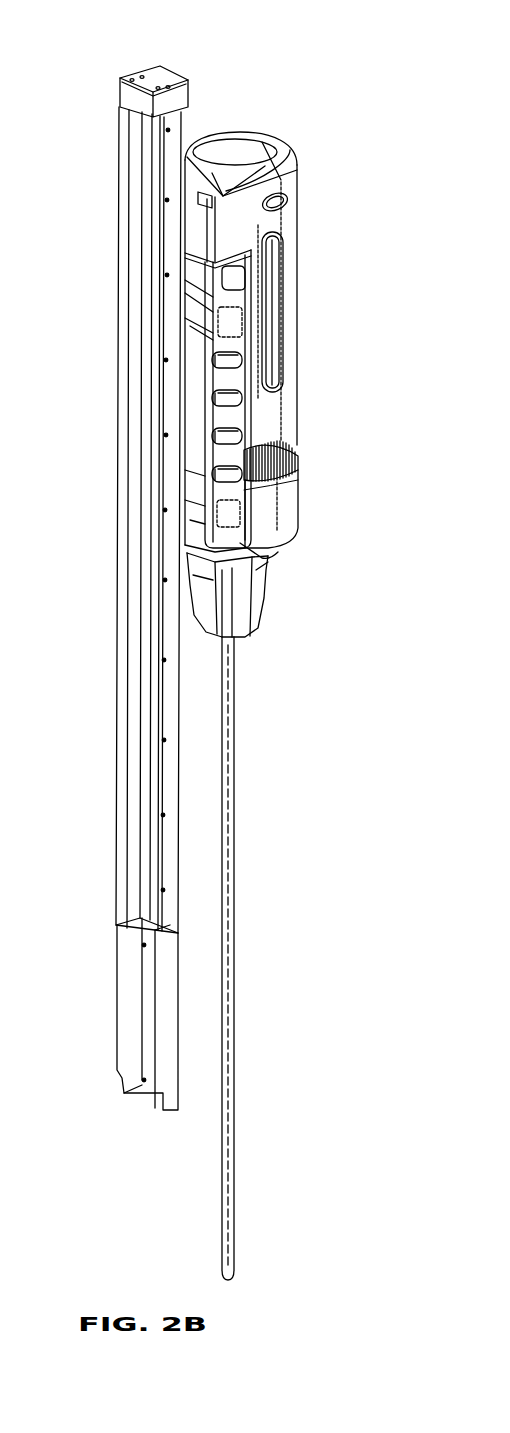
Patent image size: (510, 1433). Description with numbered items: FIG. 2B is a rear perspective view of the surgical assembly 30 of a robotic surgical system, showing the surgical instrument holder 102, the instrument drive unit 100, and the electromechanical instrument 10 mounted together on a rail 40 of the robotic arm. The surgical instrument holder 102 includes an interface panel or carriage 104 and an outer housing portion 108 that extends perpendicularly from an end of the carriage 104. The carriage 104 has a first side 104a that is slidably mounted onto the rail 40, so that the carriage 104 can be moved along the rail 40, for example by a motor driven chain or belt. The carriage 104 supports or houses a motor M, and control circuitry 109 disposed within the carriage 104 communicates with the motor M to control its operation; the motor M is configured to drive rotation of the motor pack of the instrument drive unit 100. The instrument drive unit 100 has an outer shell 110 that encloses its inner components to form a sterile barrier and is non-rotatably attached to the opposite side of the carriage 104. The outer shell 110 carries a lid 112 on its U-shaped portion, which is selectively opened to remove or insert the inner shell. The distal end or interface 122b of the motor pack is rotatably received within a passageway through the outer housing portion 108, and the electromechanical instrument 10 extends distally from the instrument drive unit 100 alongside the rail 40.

The surgical assembly 30 is at (187, 63).
The rail 40 is at (112, 115).
The instrument drive unit 100 is at (302, 328).
The lid 112 is at (253, 152).
The outer shell 110 is at (289, 366).
The motor M is at (270, 295).
The carriage 104 is at (195, 408).
The first side of carriage 104a is at (195, 285).
The surgical instrument holder 102 is at (197, 357).
The control circuitry 109 is at (187, 533).
The distal end or interface of motor pack 122b is at (292, 455).
The outer housing portion 108 is at (292, 503).
The electromechanical instrument 10 is at (262, 630).